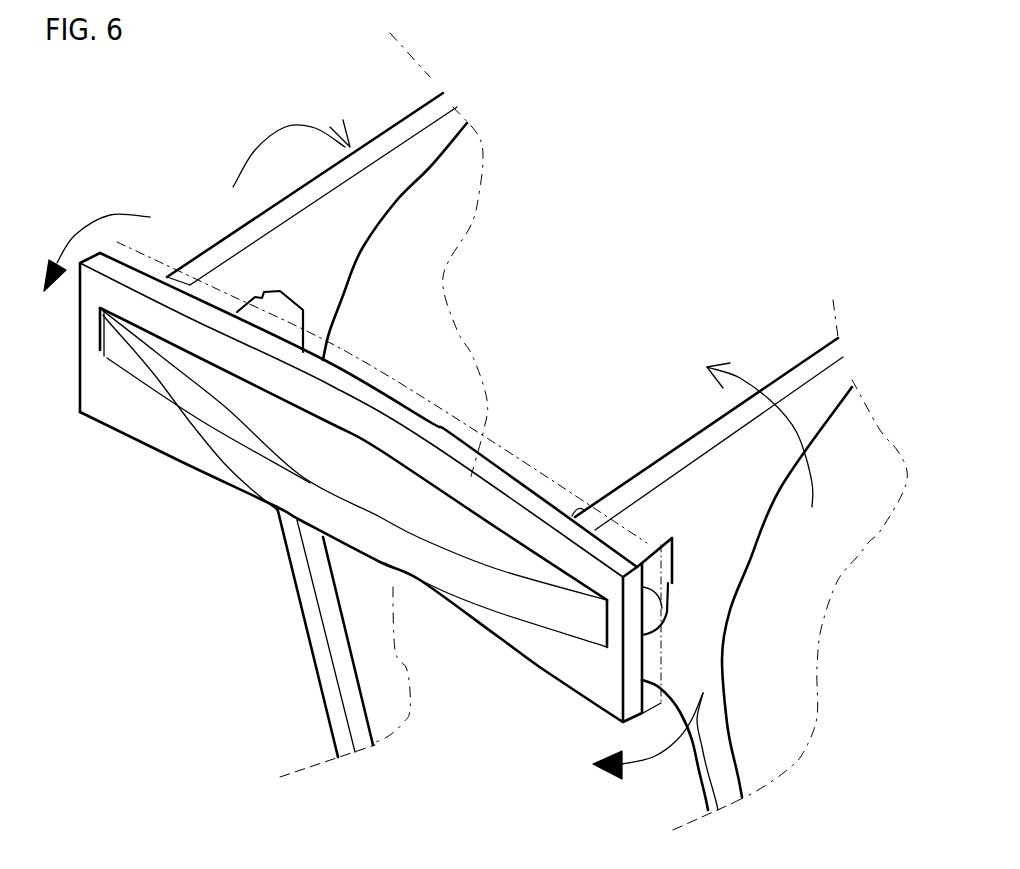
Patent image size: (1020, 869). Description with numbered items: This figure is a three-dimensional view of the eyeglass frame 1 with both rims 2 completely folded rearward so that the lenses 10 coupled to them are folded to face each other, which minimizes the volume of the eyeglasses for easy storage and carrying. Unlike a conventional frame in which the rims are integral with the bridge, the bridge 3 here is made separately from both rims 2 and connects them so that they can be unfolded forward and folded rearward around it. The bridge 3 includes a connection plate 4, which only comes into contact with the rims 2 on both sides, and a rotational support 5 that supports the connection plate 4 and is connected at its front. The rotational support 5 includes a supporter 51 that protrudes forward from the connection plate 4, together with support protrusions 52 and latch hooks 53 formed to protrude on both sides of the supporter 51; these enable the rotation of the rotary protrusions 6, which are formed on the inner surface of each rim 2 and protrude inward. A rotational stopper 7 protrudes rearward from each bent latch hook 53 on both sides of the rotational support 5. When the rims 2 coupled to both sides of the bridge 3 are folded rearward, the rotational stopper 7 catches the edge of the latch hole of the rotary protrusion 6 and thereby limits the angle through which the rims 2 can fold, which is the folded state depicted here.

The eyeglass frame 1 is at (650, 197).
The rims 2 is at (417, 123).
The bridge 3 is at (473, 753).
The connection plate 4 is at (590, 737).
The rotational support 5 is at (492, 642).
The rotary protrusions 6 is at (190, 218).
The rotational stopper 7 is at (297, 310).
The lenses 10 is at (460, 207).
The supporter 51 is at (445, 580).
The support protrusions 52 is at (107, 313).
The latch hooks 53 is at (657, 563).